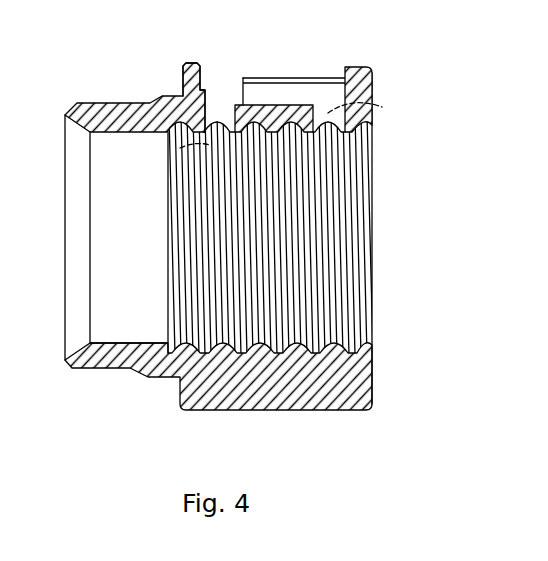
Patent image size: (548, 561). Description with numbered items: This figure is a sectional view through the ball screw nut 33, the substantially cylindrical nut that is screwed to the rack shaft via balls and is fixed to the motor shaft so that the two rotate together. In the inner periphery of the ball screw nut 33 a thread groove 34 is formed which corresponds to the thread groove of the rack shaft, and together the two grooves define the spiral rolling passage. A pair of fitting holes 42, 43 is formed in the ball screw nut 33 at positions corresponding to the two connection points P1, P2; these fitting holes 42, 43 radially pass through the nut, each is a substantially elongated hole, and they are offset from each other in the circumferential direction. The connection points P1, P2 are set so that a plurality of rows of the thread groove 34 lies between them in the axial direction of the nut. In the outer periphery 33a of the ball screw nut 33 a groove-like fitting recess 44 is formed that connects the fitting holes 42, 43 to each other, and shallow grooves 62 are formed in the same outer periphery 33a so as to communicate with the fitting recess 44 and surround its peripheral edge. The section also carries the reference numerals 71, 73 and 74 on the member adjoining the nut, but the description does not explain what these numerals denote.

The ball screw nut 33 is at (451, 56).
The outer periphery of the ball screw nut 33a is at (362, 67).
The thread groove 34 is at (317, 346).
The fitting hole 42 is at (337, 100).
The fitting hole 43 is at (243, 84).
The fitting recess 44 is at (255, 105).
The shallow grooves 62 is at (289, 78).
The ring member 71 is at (163, 66).
The flange portion of ring member 73 is at (97, 107).
The cylindrical portion of ring member 74 is at (162, 103).
The connection point P1 is at (369, 108).
The connection point P2 is at (180, 148).